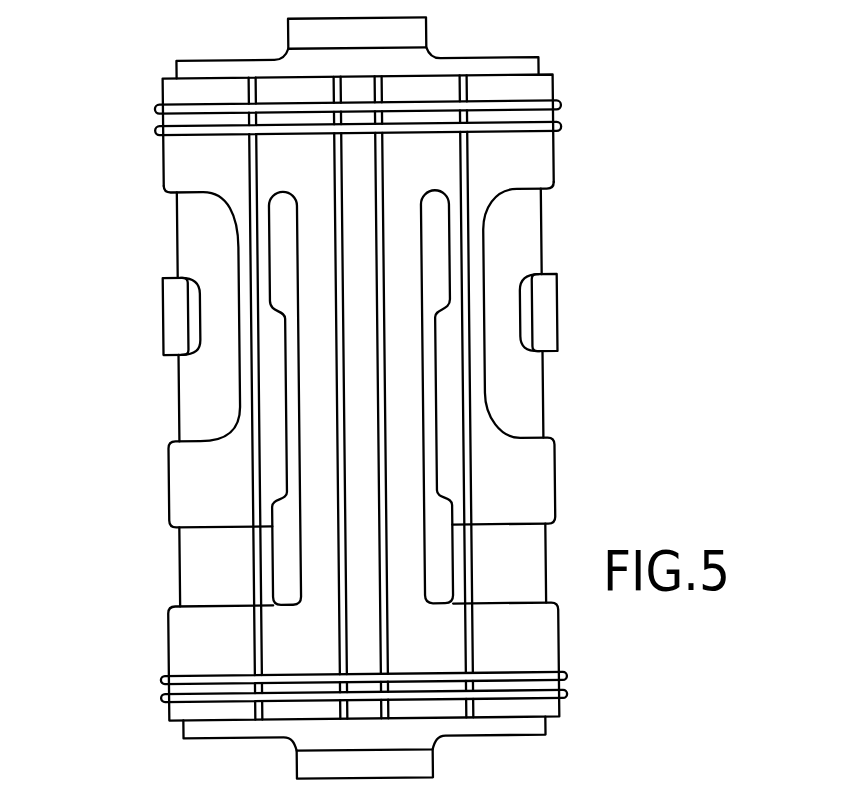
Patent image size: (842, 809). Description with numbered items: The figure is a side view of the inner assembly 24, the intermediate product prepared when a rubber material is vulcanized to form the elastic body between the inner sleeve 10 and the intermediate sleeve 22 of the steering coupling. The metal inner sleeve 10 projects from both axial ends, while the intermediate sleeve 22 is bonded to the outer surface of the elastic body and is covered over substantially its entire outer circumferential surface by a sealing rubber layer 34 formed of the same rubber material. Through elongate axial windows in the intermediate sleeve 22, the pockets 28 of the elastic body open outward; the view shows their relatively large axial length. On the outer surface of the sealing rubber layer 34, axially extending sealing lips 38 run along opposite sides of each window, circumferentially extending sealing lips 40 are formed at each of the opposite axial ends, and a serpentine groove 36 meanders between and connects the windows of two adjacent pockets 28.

The inner sleeve 10 is at (408, 33).
The intermediate sleeve 22 is at (185, 730).
The inner assembly 24 is at (118, 131).
The pocket 28 is at (282, 247).
The sealing rubber layer 34 is at (532, 492).
The serpentine groove 36 is at (197, 440).
The sealing lip 38 is at (252, 318).
The circumferentially extending sealing lip 40 is at (520, 101).